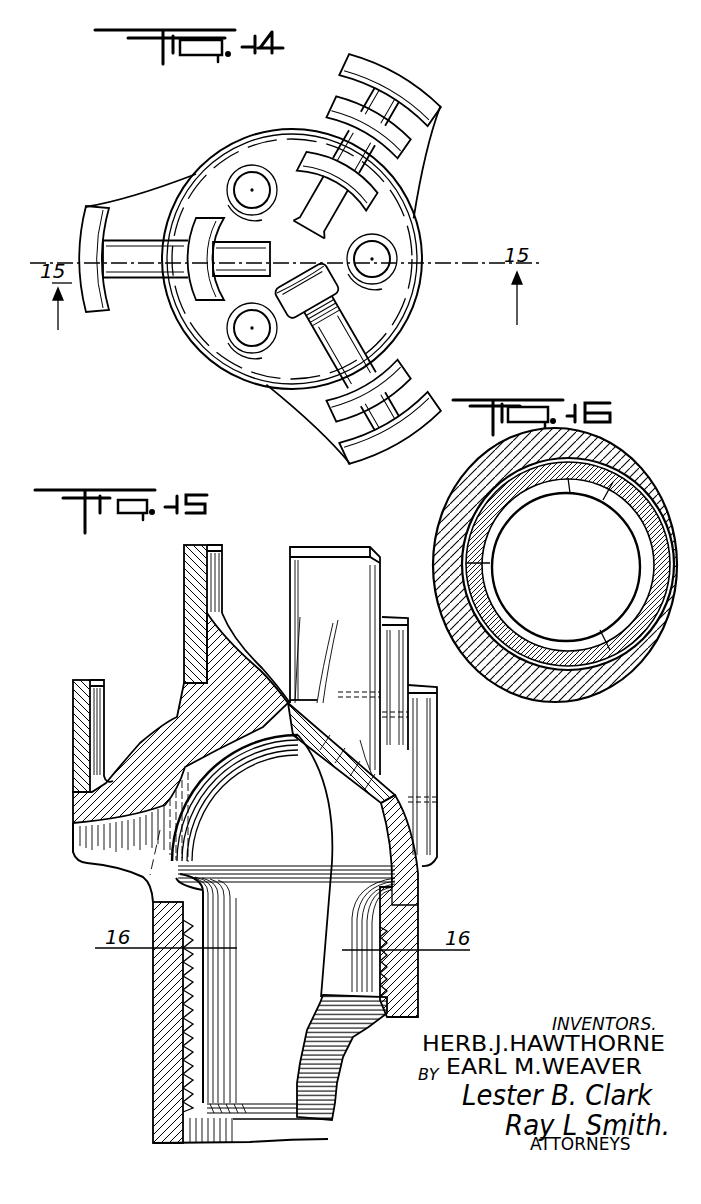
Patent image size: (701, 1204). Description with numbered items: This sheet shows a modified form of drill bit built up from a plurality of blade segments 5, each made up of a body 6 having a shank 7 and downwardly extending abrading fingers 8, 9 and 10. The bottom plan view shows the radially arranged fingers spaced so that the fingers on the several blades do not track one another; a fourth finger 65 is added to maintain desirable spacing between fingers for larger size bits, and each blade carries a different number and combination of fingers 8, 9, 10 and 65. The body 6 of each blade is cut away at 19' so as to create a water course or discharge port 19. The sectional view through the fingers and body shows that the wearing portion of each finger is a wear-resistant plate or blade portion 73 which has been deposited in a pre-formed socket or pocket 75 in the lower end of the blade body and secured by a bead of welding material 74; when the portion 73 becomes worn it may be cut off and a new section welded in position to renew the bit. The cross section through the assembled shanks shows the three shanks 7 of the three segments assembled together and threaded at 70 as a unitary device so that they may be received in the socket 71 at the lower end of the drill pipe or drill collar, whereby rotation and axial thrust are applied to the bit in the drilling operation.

In FIG. 14, the blade segment 5 is at (225, 164).
In FIG. 16, the blade segment 5 is at (572, 480).
In FIG. 15, the blade segment 5 is at (210, 937).
In FIG. 16, the body 6 is at (498, 510).
In FIG. 15, the body 6 is at (181, 860).
In FIG. 15, the shank 7 is at (207, 1080).
In FIG. 14, the abrading finger 8 is at (407, 158).
In FIG. 14, the abrading finger 9 is at (377, 208).
In FIG. 14, the abrading finger 10 is at (337, 300).
In FIG. 15, the water course or discharge port 19 is at (341, 776).
In FIG. 14, the cut-away portion of the body 19' is at (314, 265).
In FIG. 14, the fourth blade finger 65 is at (358, 62).
In FIG. 15, the threads 70 is at (186, 1036).
In FIG. 15, the socket 71 is at (176, 975).
In FIG. 15, the wear-resistant blade portion 73 is at (203, 609).
In FIG. 15, the bead of welding material 74 is at (188, 684).
In FIG. 15, the pre-formed socket or pocket 75 is at (212, 650).